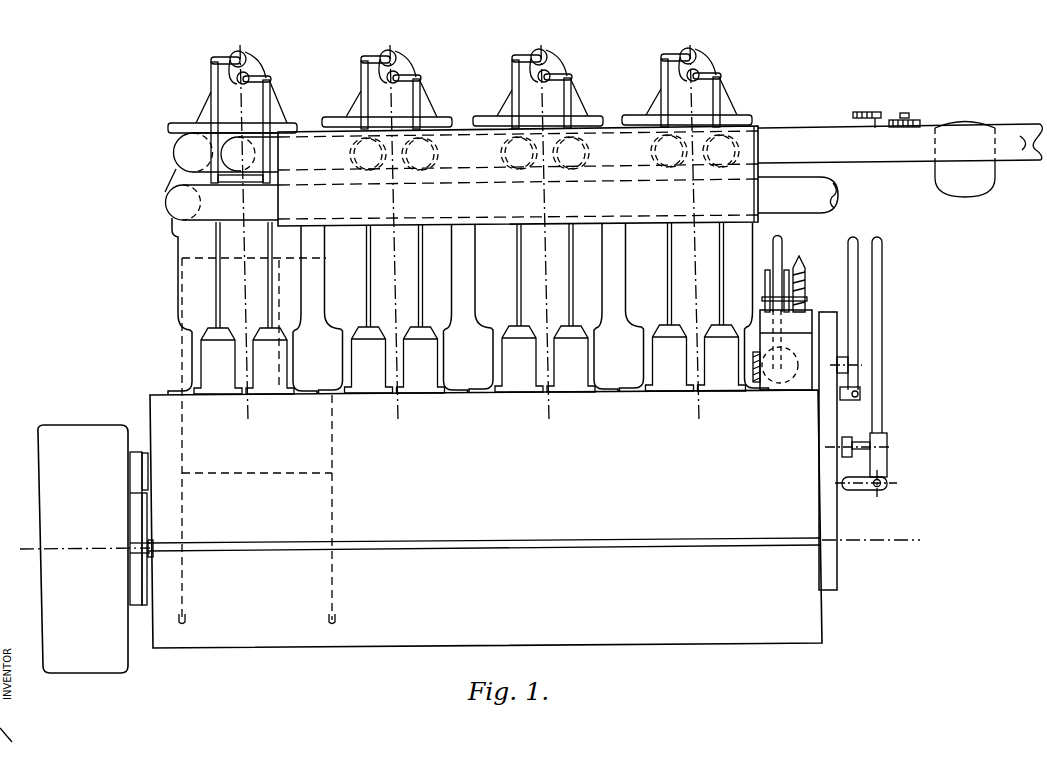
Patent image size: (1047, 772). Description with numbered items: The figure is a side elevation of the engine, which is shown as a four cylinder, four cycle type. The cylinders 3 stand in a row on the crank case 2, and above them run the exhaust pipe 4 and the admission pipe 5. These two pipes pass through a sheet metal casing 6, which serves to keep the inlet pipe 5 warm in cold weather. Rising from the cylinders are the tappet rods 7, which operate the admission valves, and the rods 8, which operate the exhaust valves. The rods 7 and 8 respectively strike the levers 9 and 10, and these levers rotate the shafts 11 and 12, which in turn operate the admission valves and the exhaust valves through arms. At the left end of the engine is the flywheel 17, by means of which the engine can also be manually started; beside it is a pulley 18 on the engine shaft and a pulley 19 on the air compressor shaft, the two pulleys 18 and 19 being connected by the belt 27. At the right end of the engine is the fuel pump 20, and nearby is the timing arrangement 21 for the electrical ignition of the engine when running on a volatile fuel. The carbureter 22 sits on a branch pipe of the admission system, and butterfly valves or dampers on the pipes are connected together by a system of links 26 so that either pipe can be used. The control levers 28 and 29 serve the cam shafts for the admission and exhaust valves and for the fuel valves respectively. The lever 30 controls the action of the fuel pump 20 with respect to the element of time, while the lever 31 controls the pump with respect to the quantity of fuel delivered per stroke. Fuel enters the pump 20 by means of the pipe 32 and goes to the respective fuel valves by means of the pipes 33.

The crank case 2 is at (470, 453).
The cylinders 3 is at (468, 232).
The exhaust pipe 4 is at (798, 195).
The admission pipe 5 is at (900, 143).
The sheet metal casing 6 is at (461, 176).
The tappet rods 7 is at (215, 242).
The rods for the exhaust valves 8 is at (267, 242).
The levers 9 is at (219, 60).
The levers 10 is at (272, 78).
The shaft 11 is at (245, 56).
The shaft 12 is at (250, 74).
The flywheel 17 is at (83, 549).
The pulley on the shaft 18 is at (131, 604).
The pulley on the air compressor shaft 19 is at (143, 453).
The fuel pump 20 is at (786, 350).
The timing arrangement 21 is at (749, 384).
The carbureter 22 is at (965, 160).
The system of links 26 is at (893, 113).
The belt 27 is at (135, 520).
The control lever 28 is at (882, 263).
The control lever 29 is at (866, 483).
The lever 30 is at (848, 263).
The lever 31 is at (782, 248).
The pipe 32 is at (800, 298).
The pipes 33 is at (796, 268).